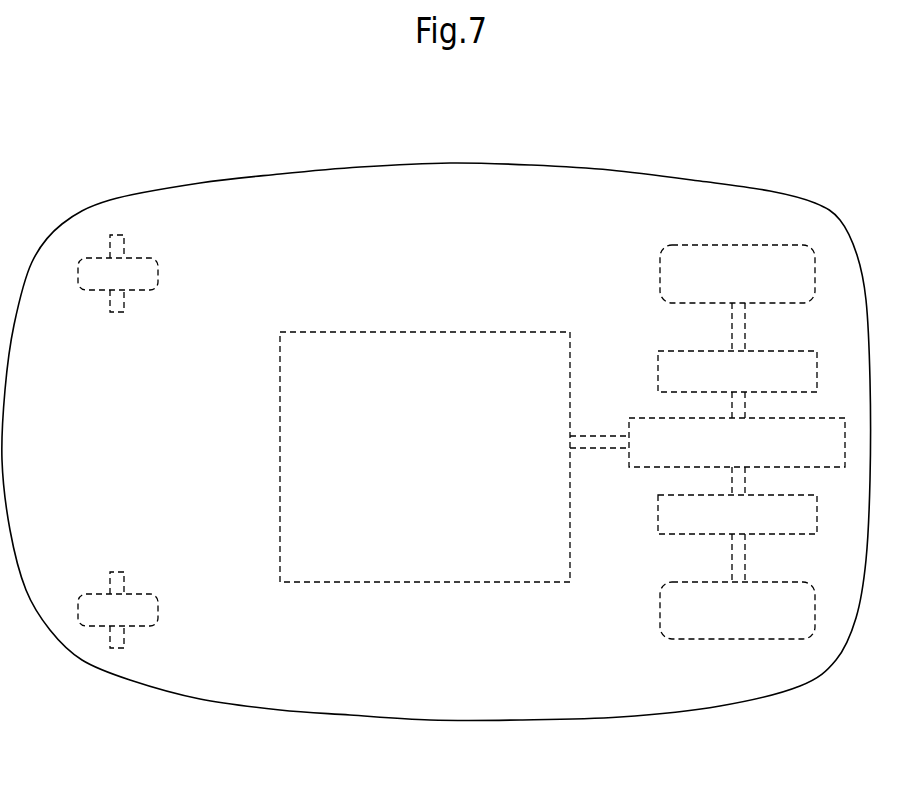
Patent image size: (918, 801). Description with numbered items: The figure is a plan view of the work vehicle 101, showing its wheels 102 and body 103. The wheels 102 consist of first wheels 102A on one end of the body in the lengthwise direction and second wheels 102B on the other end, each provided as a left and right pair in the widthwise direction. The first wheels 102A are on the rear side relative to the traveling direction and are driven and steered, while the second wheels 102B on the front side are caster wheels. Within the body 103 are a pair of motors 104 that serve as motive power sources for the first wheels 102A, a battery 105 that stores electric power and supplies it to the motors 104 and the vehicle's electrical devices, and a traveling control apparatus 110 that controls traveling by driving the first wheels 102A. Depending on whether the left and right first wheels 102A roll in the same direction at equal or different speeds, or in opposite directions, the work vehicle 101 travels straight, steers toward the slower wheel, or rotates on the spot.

The work vehicle 101 is at (436, 410).
The wheels 102 is at (455, 446).
The first wheels 102A is at (737, 250).
The second wheels 102B is at (158, 274).
The body 103 is at (518, 178).
The motors 104 is at (658, 364).
The battery 105 is at (457, 332).
The traveling control apparatus 110 is at (830, 467).